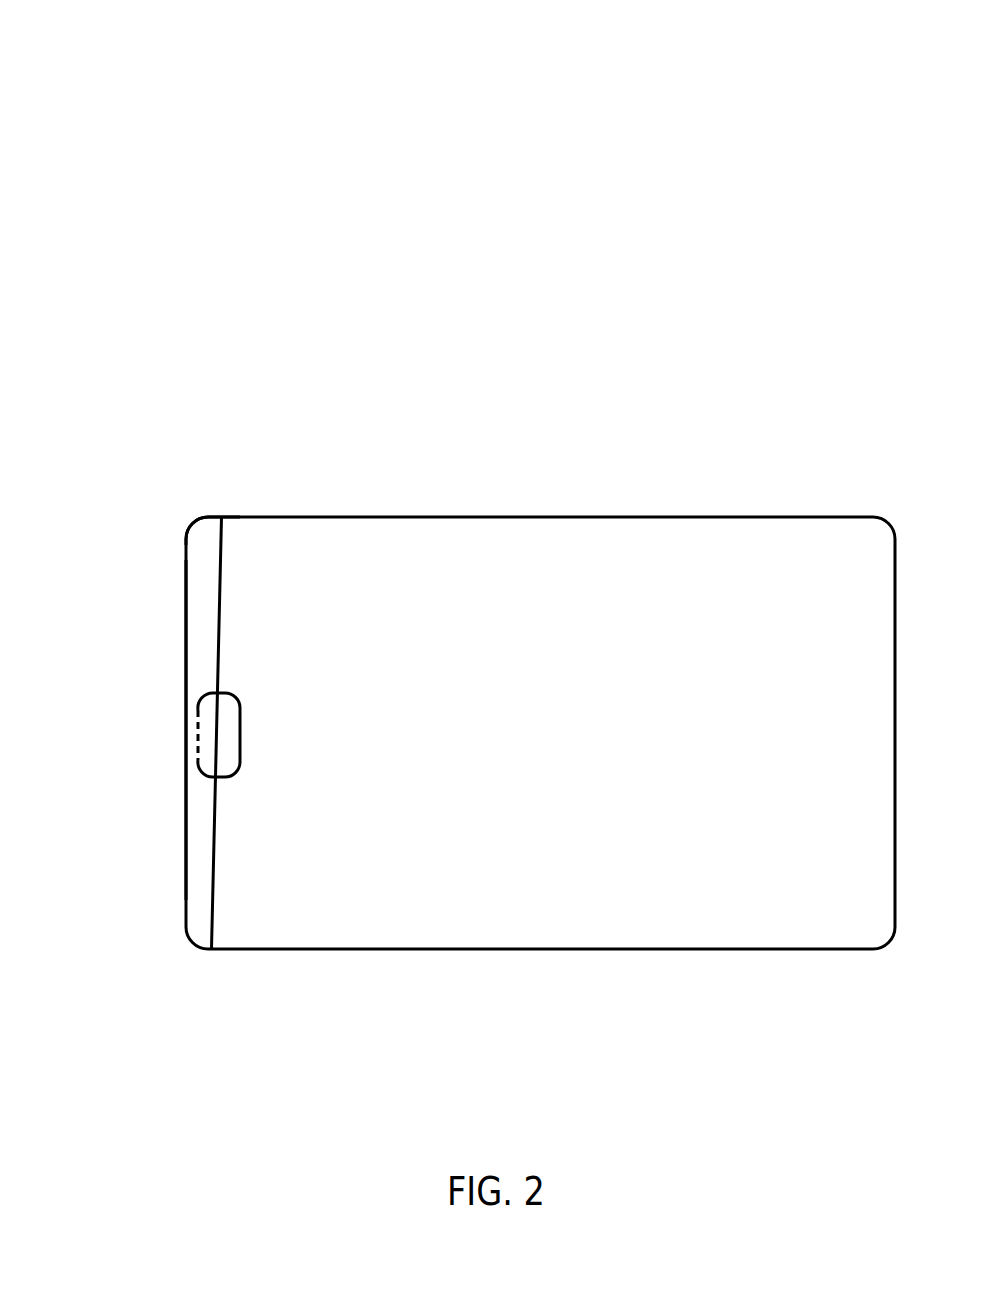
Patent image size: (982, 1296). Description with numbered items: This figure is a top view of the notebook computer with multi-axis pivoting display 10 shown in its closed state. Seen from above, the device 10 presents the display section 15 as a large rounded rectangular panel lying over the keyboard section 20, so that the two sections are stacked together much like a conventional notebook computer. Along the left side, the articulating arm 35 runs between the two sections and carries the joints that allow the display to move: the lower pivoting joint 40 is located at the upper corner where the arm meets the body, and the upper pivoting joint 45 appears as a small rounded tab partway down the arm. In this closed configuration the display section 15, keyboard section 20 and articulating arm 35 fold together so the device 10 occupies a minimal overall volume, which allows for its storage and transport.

The notebook computer with multi-axis pivoting display 10 is at (168, 190).
The display section 15 is at (529, 628).
The keyboard section 20 is at (212, 865).
The articulating arm 35 is at (212, 606).
The lower pivoting joint 40 is at (210, 540).
The upper pivoting joint 45 is at (213, 736).